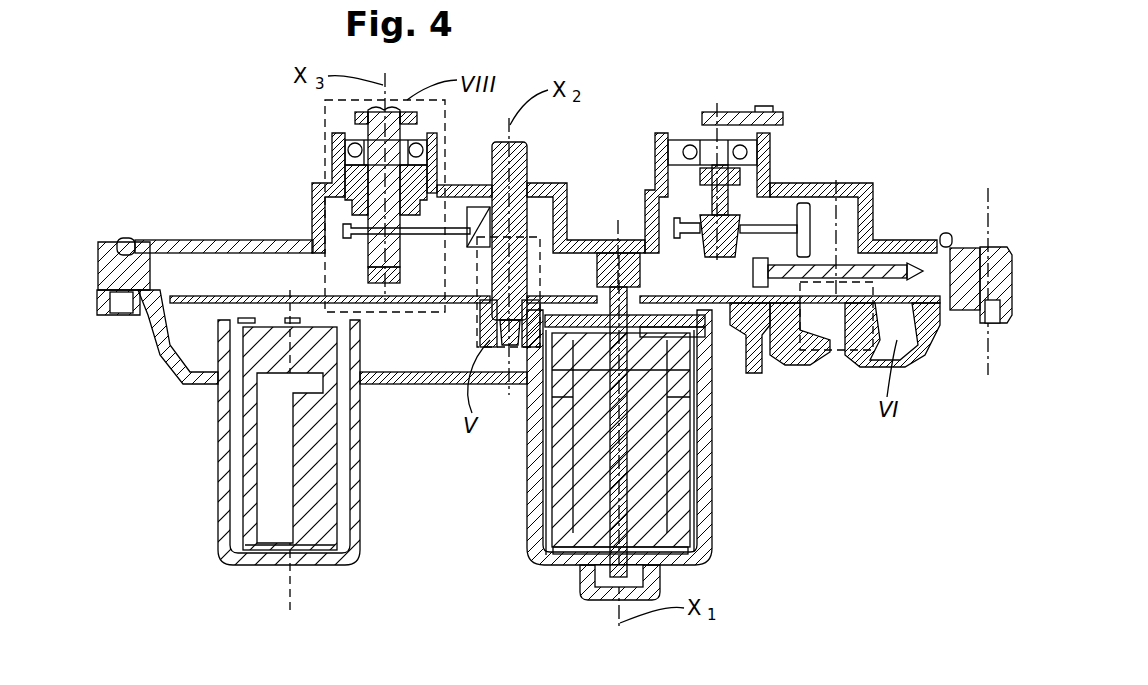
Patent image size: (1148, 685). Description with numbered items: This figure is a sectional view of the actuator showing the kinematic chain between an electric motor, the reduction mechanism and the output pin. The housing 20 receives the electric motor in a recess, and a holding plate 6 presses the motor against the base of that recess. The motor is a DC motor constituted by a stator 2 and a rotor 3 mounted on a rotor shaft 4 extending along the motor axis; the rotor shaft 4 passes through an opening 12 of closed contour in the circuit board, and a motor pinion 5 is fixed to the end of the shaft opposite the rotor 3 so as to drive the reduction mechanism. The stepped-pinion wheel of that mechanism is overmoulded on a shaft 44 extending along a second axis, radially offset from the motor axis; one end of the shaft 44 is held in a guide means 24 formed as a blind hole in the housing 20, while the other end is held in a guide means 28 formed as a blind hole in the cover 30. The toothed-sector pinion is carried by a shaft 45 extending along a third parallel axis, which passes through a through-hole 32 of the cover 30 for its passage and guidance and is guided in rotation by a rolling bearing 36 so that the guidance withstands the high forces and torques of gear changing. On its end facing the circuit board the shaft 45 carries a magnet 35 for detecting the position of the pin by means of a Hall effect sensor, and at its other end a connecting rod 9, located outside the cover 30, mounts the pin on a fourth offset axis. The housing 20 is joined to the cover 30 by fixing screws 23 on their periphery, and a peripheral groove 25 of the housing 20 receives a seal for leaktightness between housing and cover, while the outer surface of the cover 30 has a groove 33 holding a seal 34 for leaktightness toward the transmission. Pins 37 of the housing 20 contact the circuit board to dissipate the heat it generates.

The stator 2 is at (680, 480).
The rotor 3 is at (633, 517).
The rotor shaft 4 is at (668, 335).
The motor pinion 5 is at (585, 250).
The holding plate 6 is at (548, 380).
The connecting rod 9 is at (423, 111).
The opening 12 is at (662, 340).
The housing 20 is at (387, 386).
The fixing screw 23 is at (1003, 324).
The guide means 24 is at (478, 318).
The peripheral groove 25 is at (123, 302).
The guide means 28 is at (542, 193).
The cover 30 is at (197, 241).
The through-hole 32 is at (353, 184).
The groove 33 is at (122, 241).
The seal 34 is at (130, 246).
The magnet 35 is at (367, 277).
The rolling bearing 36 is at (332, 148).
The pin 37 is at (800, 330).
The shaft 44 is at (516, 178).
The shaft 45 is at (428, 190).